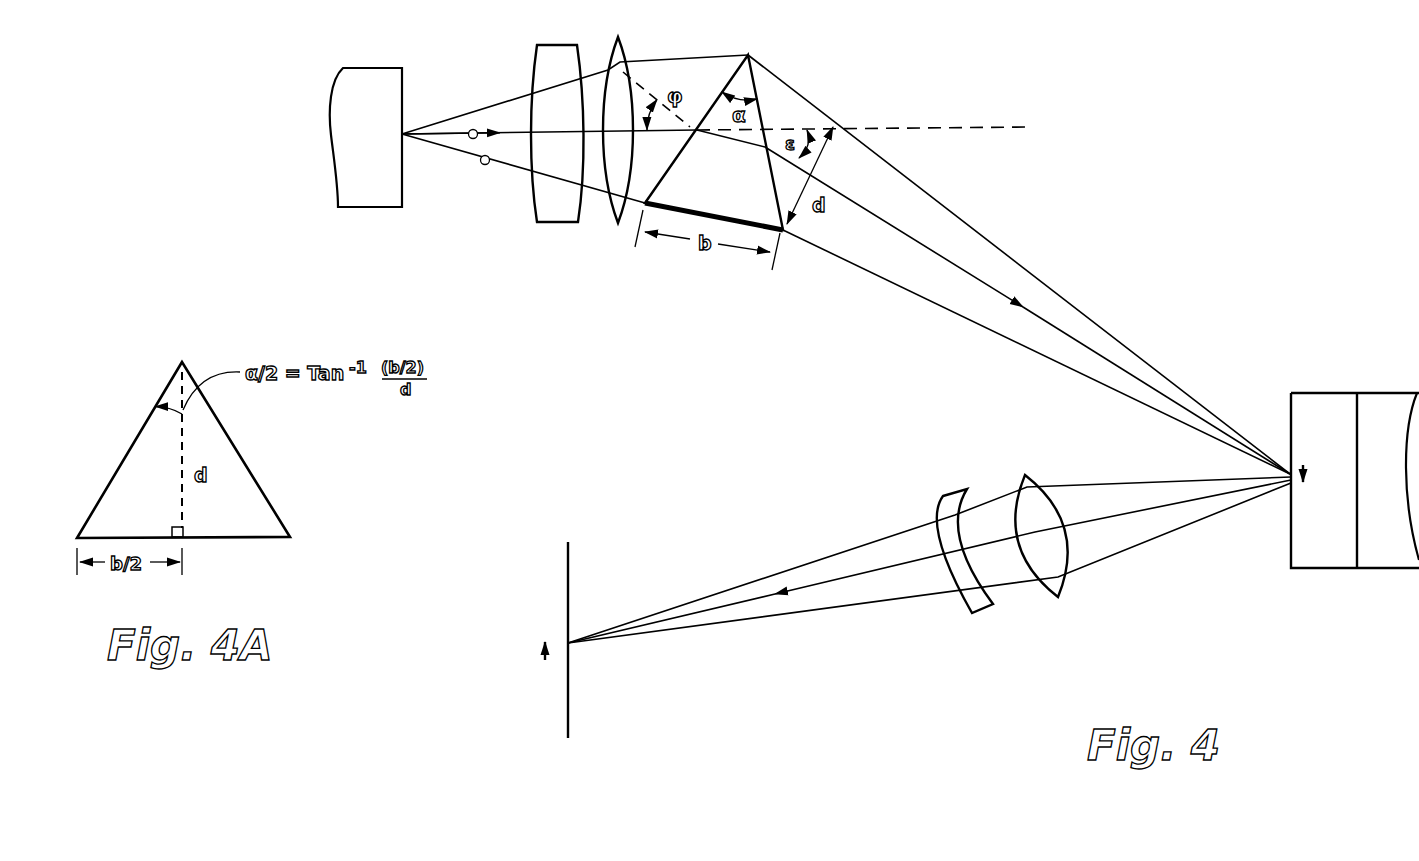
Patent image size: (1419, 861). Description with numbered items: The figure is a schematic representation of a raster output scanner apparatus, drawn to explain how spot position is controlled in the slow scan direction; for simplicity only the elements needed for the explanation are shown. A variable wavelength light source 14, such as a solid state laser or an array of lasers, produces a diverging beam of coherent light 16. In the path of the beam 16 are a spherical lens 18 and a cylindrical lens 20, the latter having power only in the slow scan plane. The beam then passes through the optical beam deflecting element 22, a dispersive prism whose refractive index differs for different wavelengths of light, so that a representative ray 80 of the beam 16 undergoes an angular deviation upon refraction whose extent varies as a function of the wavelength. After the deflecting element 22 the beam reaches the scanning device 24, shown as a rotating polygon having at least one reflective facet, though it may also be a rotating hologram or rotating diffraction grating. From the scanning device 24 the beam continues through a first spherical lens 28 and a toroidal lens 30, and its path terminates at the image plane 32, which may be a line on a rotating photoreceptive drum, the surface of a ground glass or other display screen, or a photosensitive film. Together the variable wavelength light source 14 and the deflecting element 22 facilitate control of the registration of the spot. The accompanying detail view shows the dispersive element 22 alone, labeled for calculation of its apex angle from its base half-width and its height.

In FIG. 4, the light source 14 is at (372, 208).
In FIG. 4, the beam of coherent light 16 is at (485, 165).
In FIG. 4, the representative ray 80 is at (473, 129).
In FIG. 4, the spherical lens 18 is at (557, 223).
In FIG. 4, the cylindrical lens 20 is at (620, 223).
In FIG. 4, the optical beam deflecting element 22 is at (750, 56).
In FIG. 4A, the optical beam deflecting element 22 is at (258, 475).
In FIG. 4, the scanning device 24 is at (1327, 393).
In FIG. 4, the first spherical lens 28 is at (1026, 476).
In FIG. 4, the toroidal lens 30 is at (952, 492).
In FIG. 4, the image plane 32 is at (566, 570).